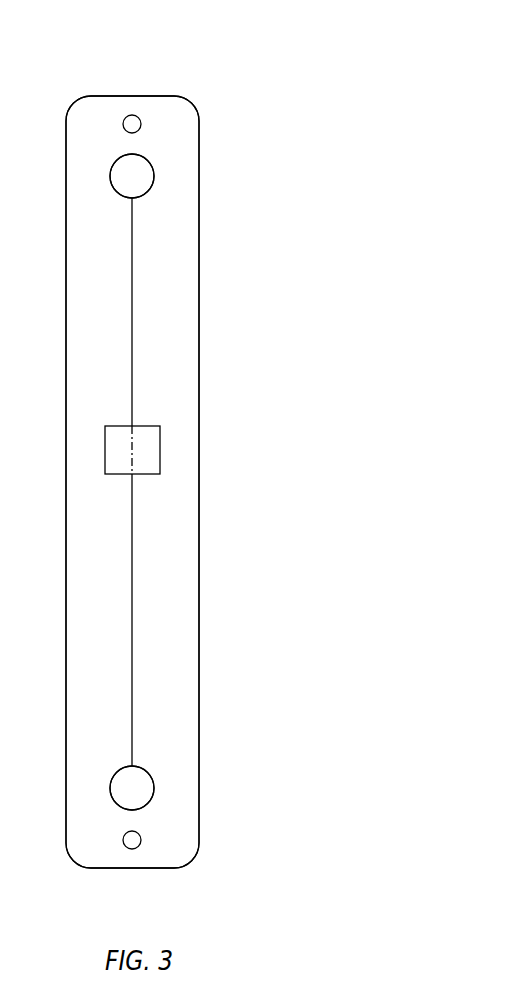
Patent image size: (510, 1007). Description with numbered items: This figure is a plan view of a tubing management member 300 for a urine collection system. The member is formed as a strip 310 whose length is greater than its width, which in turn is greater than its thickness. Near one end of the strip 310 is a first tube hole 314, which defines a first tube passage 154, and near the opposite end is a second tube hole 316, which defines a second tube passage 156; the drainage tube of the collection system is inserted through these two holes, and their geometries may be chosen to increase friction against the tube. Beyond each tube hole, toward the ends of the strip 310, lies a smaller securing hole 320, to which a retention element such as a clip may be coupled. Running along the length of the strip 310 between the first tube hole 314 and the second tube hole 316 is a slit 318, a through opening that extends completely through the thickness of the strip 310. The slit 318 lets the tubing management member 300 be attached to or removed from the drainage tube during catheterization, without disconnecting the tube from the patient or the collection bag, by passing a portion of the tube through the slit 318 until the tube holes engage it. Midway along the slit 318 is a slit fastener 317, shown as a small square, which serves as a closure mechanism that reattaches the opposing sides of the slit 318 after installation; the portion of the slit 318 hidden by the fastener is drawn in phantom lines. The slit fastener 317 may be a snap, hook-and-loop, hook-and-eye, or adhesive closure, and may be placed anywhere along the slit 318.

The tubing management member 300 is at (240, 55).
The strip 310 is at (199, 410).
The securing holes 320 is at (132, 113).
The first tube passage 154 is at (160, 154).
The first tube hole 314 is at (155, 176).
The slit 318 is at (132, 495).
The slit fastener 317 is at (160, 448).
The second tube passage 156 is at (152, 762).
The second tube hole 316 is at (155, 782).